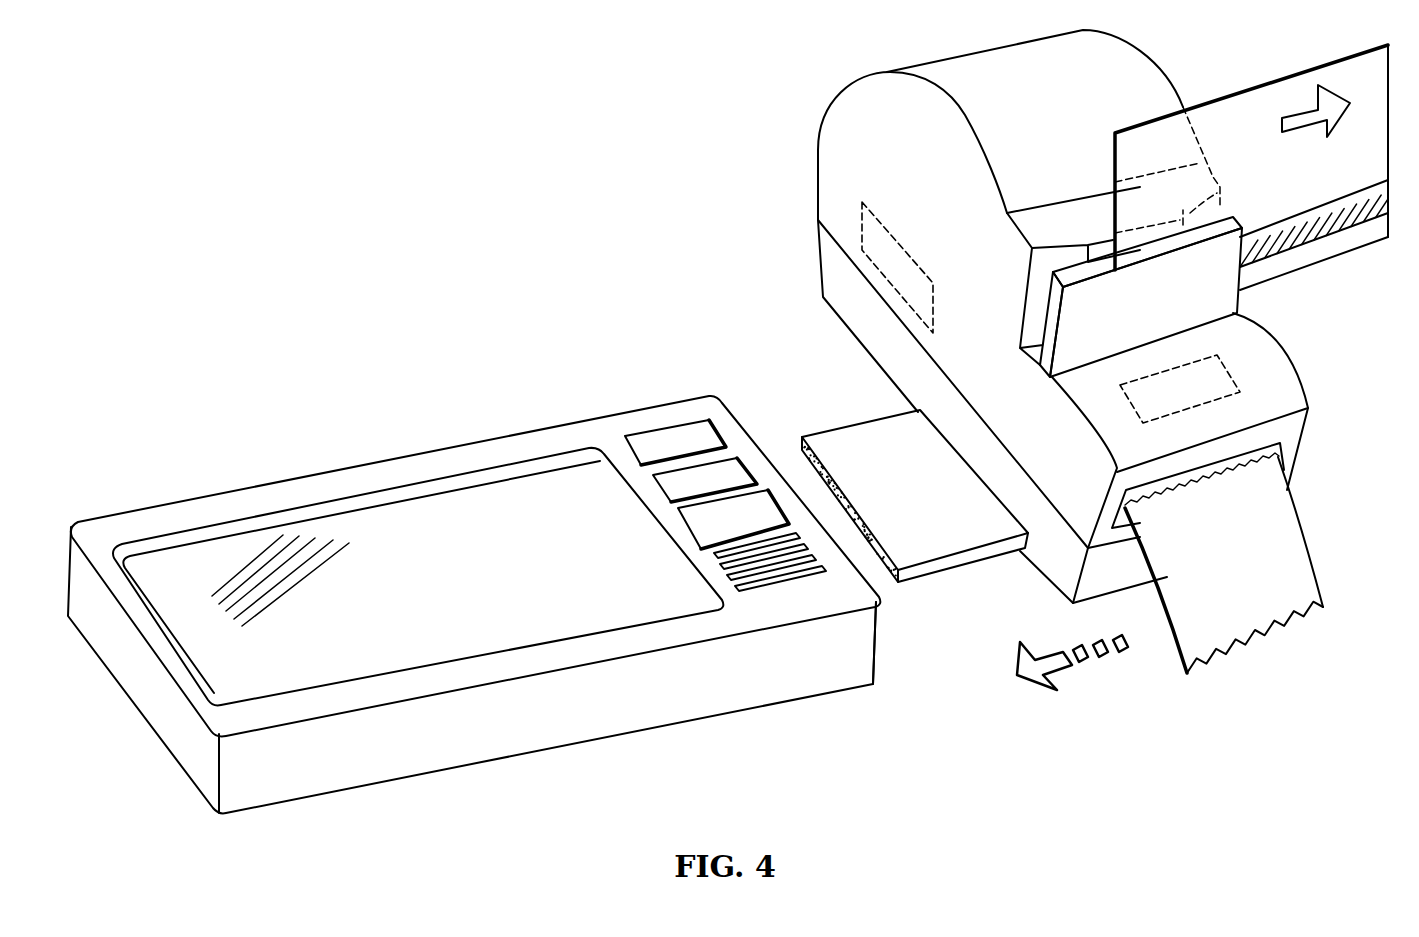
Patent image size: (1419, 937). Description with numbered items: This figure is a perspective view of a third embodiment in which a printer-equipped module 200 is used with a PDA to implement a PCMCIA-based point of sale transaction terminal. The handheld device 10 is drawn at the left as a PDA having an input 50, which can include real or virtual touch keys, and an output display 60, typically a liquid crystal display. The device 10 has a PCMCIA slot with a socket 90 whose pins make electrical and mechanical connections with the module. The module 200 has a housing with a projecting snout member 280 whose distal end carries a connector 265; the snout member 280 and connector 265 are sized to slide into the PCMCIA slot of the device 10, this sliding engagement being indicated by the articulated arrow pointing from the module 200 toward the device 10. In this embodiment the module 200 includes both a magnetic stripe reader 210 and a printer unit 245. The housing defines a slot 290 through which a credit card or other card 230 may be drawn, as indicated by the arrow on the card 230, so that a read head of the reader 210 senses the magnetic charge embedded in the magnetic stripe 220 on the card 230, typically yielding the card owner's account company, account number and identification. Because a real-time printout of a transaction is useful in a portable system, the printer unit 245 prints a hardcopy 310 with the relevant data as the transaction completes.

The device 10 is at (252, 427).
The input 50 is at (638, 404).
The display 60 is at (189, 556).
The socket 90 is at (828, 559).
The module 200 is at (777, 62).
The magnetic stripe reader 210 is at (1213, 386).
The magnetic stripe 220 is at (1327, 212).
The card 230 is at (1285, 64).
The printer unit 245 is at (885, 228).
The connector 265 is at (882, 560).
The snout member 280 is at (852, 418).
The slot 290 is at (1046, 258).
The hardcopy 310 is at (1271, 603).